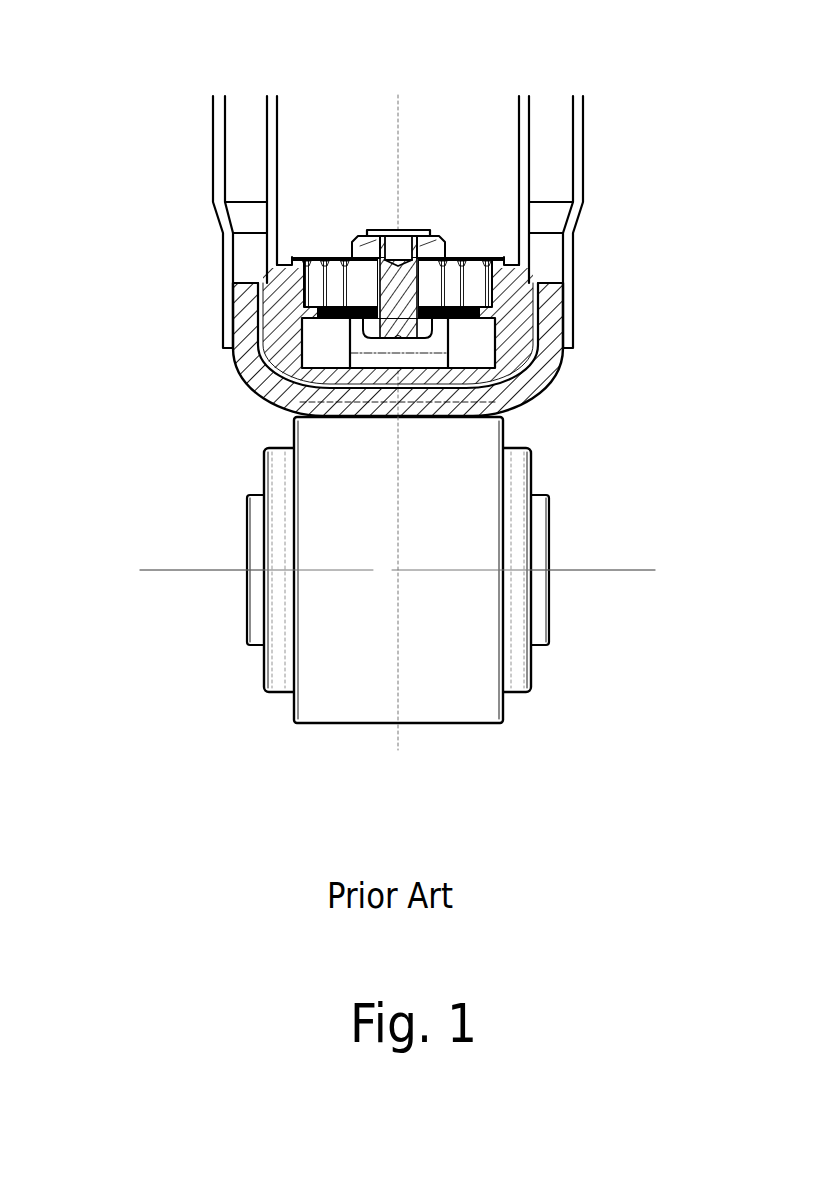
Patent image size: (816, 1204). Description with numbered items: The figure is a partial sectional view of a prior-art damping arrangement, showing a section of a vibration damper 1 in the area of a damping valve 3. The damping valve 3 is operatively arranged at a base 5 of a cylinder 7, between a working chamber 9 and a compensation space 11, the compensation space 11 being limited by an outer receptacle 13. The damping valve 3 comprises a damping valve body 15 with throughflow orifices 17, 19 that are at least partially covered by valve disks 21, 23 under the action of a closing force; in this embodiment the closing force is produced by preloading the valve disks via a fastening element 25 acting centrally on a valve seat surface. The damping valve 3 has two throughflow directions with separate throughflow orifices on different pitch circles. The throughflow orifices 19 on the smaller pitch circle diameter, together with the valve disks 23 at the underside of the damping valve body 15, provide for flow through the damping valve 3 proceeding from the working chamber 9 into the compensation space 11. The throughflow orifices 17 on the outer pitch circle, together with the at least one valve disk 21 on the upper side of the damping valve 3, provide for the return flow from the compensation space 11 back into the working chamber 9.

The vibration damper 1 is at (399, 395).
The damping valve 3 is at (427, 306).
The base 5 is at (263, 371).
The cylinder 7 is at (525, 135).
The working chamber 9 is at (205, 212).
The compensation space 11 is at (248, 117).
The outer receptacle 13 is at (578, 133).
The damping valve body 15 is at (510, 307).
The throughflow orifice 17 is at (483, 297).
The throughflow orifice 19 is at (443, 280).
The valve disk 21 is at (310, 251).
The valve disk 23 is at (465, 317).
The fastening element 25 is at (388, 316).